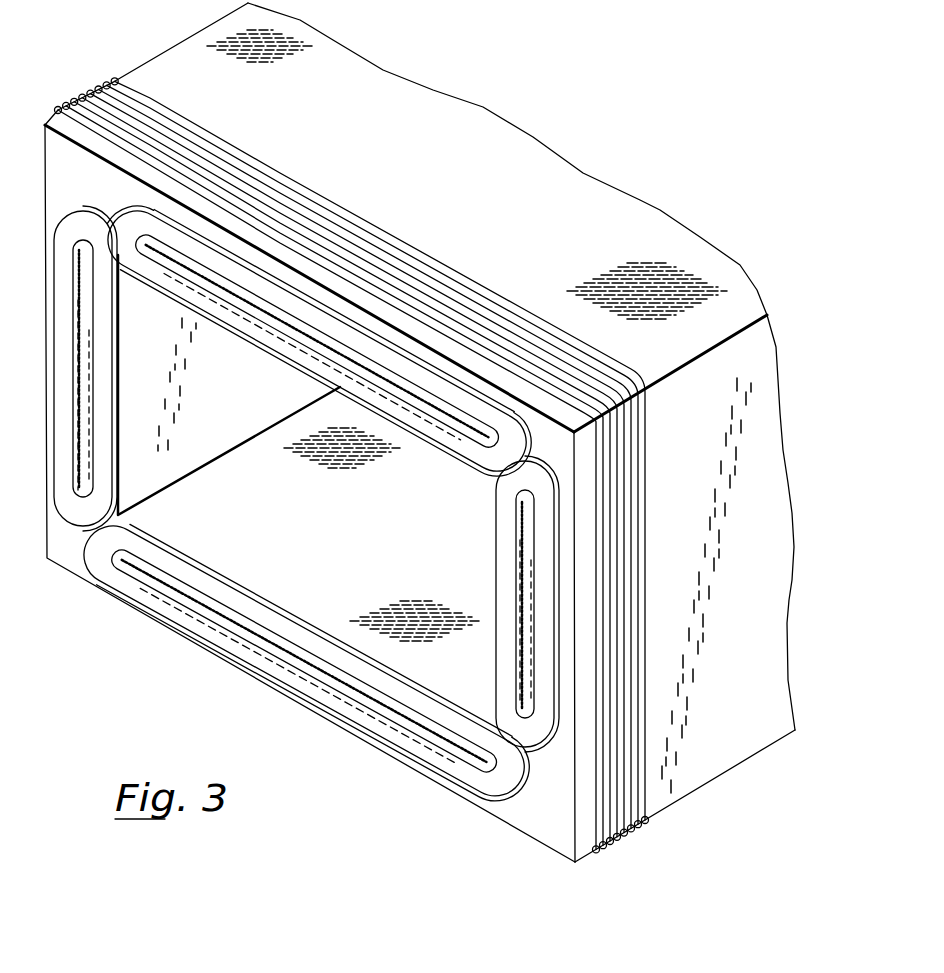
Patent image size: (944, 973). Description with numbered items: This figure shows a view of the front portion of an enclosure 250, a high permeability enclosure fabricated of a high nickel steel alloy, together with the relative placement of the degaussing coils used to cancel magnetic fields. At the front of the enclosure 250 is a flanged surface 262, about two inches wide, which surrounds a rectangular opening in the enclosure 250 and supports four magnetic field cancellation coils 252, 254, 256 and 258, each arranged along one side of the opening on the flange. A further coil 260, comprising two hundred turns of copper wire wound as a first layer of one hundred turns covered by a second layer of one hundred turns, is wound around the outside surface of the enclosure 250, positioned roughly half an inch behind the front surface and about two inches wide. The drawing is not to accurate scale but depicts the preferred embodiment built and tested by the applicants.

The enclosure 250 is at (783, 503).
The magnetic field cancellation coil 252 is at (107, 438).
The magnetic field cancellation coil 254 is at (510, 514).
The magnetic field cancellation coil 256 is at (295, 347).
The magnetic field cancellation coil 258 is at (302, 678).
The coil 260 is at (127, 100).
The flanged surface 262 is at (73, 558).